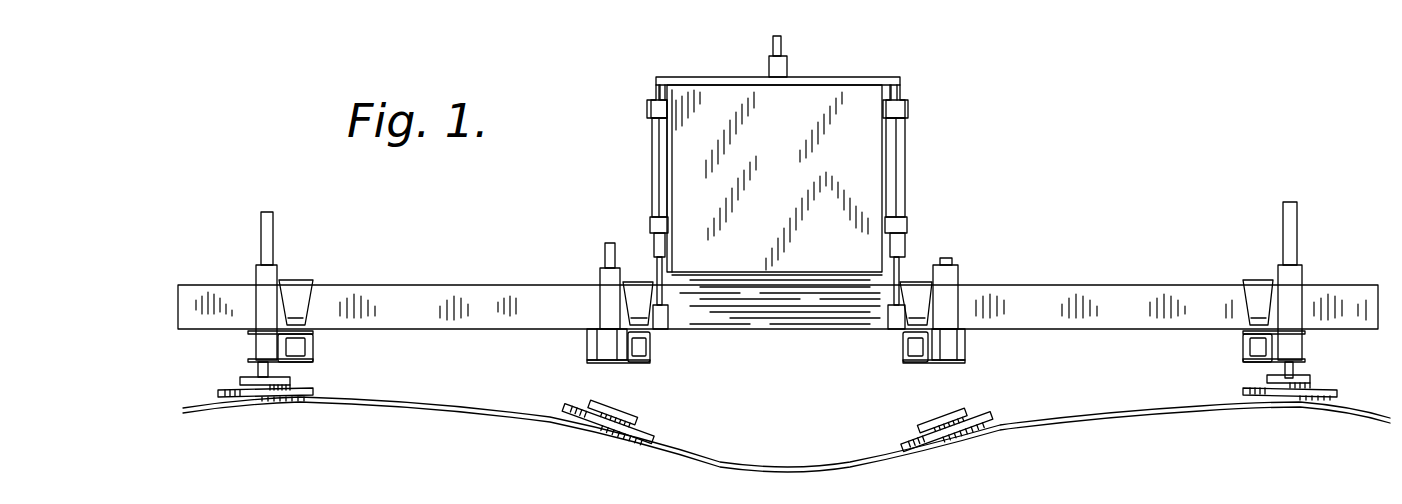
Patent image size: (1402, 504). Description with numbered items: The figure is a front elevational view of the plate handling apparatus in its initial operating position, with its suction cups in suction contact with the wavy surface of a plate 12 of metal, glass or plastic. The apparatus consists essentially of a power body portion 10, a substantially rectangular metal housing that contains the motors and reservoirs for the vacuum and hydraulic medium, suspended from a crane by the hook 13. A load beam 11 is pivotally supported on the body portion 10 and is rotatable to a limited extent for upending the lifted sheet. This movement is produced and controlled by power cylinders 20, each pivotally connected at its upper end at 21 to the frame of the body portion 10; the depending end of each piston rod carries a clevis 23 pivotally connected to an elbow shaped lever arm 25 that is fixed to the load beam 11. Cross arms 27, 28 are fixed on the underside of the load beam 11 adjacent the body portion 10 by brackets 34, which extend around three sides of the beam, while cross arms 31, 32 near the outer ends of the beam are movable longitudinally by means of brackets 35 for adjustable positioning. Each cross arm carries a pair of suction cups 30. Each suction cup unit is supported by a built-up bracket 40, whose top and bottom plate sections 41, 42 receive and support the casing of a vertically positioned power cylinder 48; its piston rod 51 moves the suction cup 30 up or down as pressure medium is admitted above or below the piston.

The power body portion 10 is at (793, 190).
The load beam 11 is at (378, 305).
The plate 12 is at (1066, 426).
The hook 13 is at (782, 38).
The power cylinder 20 is at (655, 172).
The pivotal connection 21 is at (652, 100).
The clevis 23 is at (655, 250).
The lever arm 25 is at (672, 275).
The cross arm 27 is at (640, 344).
The cross arm 28 is at (912, 343).
The suction cup 30 is at (240, 375).
The cross arm 31 is at (300, 344).
The cross arm 32 is at (1248, 345).
The bracket 34 is at (637, 283).
The bracket 35 is at (297, 285).
The built-up bracket 40 is at (930, 366).
The top plate section 41 is at (592, 327).
The bottom plate section 42 is at (593, 362).
The power cylinder 48 is at (1292, 298).
The piston rod 51 is at (1290, 372).